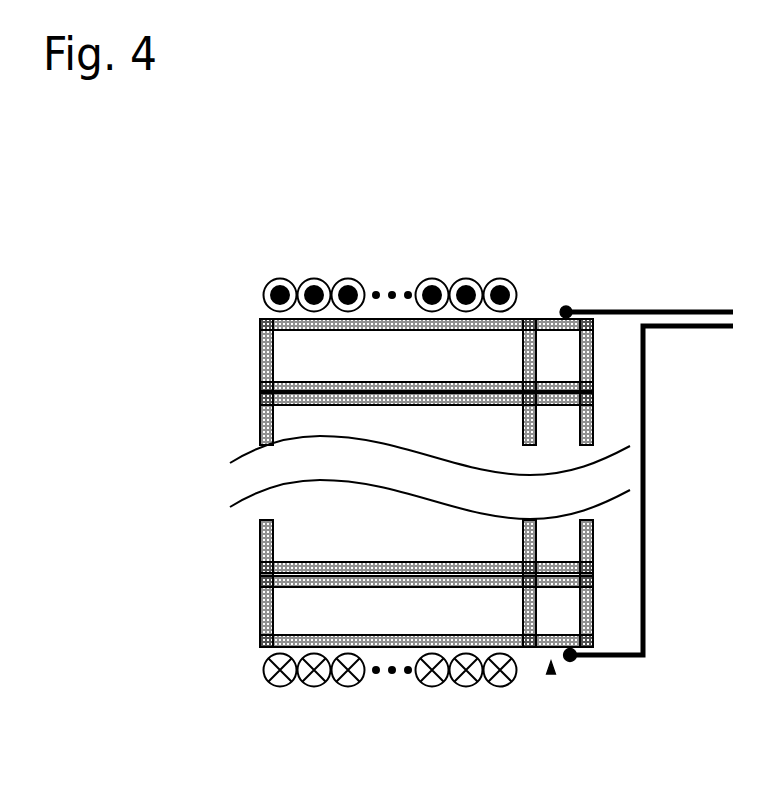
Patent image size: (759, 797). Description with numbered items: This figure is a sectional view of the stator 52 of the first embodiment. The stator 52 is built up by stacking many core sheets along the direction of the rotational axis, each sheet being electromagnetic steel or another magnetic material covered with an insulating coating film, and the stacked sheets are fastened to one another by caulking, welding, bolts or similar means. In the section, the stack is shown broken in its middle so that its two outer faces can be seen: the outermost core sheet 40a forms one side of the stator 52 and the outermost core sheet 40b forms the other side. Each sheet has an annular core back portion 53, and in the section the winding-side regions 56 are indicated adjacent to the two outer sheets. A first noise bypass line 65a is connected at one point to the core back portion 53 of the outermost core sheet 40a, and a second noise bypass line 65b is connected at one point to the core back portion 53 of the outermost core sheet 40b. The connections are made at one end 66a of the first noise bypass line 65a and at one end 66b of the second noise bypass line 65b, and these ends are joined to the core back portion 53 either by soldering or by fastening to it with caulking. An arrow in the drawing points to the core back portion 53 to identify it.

The stator 52 is at (197, 226).
The outermost core sheet 40a is at (250, 322).
The outermost core sheet 40b is at (250, 582).
The manifold tubes / flow ports 56 is at (349, 279).
The first noise bypass line 65a is at (660, 309).
The second noise bypass line 65b is at (625, 658).
The one end of the noise bypass line 66a is at (566, 306).
The one end of the noise bypass line 66b is at (570, 662).
The core back portion 53 is at (551, 670).